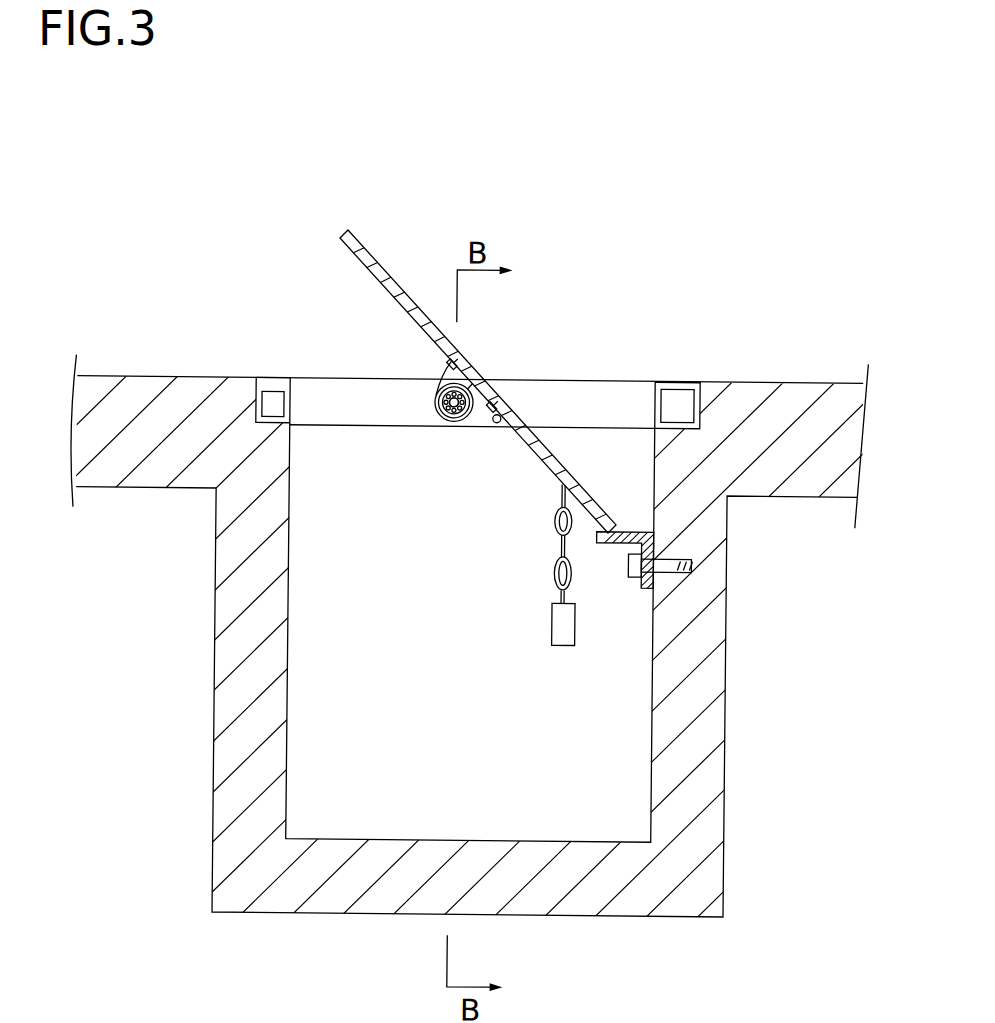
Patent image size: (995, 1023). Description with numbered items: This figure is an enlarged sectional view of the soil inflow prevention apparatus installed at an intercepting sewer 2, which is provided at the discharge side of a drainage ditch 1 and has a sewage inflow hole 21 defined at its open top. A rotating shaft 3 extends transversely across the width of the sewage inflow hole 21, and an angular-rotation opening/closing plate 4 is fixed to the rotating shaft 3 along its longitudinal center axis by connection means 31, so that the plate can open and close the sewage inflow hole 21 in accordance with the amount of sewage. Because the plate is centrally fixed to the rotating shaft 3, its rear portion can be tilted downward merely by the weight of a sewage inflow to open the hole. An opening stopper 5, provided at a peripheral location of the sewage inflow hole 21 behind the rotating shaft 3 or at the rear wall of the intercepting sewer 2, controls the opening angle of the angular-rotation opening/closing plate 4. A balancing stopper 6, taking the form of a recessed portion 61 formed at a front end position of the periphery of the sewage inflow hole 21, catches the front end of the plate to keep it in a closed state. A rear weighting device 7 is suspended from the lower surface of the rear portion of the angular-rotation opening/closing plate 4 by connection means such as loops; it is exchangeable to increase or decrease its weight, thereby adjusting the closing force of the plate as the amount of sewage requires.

The drainage ditch 1 is at (756, 378).
The intercepting sewer 2 is at (596, 766).
The sewage inflow hole 21 is at (607, 396).
The rotating shaft 3 is at (459, 380).
The connection means 31 is at (426, 422).
The angular-rotation opening/closing plate 4 is at (376, 278).
The opening stopper 5 is at (495, 410).
The balancing stopper 6 is at (274, 366).
The recessed portion 61 is at (262, 376).
The rear weighting device 7 is at (563, 625).